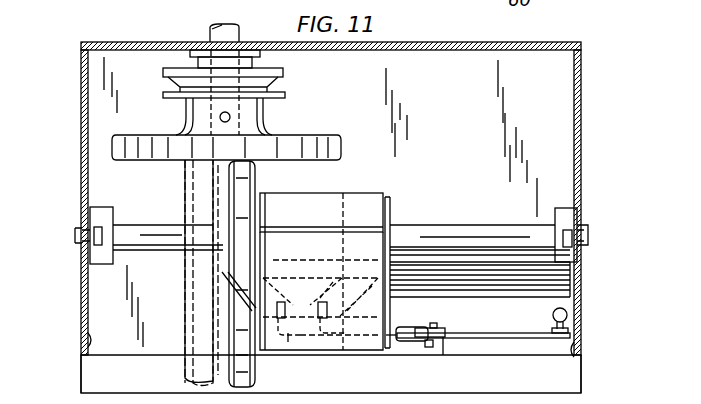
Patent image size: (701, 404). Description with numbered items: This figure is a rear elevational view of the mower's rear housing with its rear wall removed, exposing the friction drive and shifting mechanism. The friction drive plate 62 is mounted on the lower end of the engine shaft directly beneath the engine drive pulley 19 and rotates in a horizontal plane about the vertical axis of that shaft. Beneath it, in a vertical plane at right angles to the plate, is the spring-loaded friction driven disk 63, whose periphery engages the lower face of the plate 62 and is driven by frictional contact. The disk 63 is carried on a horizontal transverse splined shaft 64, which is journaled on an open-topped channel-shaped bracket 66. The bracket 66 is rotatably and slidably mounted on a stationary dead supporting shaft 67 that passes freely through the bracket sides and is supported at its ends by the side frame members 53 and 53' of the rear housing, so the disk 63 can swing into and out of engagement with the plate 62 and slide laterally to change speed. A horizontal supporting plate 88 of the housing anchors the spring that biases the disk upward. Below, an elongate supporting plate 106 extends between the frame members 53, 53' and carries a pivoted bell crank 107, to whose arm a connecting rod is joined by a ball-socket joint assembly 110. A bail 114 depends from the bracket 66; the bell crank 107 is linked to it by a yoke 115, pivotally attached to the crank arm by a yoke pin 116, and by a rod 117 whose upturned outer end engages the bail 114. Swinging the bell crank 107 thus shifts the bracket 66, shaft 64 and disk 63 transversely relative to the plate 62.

The engine drive pulley 19 is at (284, 72).
The side frame member 53 is at (599, 221).
The side frame member 53' is at (57, 221).
The friction drive plate 62 is at (300, 142).
The friction driven disk 63 is at (240, 168).
The splined shaft 64 is at (468, 287).
The bracket 66 is at (382, 198).
The dead supporting shaft 67 is at (483, 226).
The horizontal supporting plate 88 is at (155, 42).
The supporting plate 106 is at (570, 380).
The bell crank 107 is at (511, 334).
The ball-socket joint assembly 110 is at (553, 317).
The bail 114 is at (280, 294).
The yoke 115 is at (405, 342).
The yoke pin 116 is at (433, 341).
The rod 117 is at (350, 340).